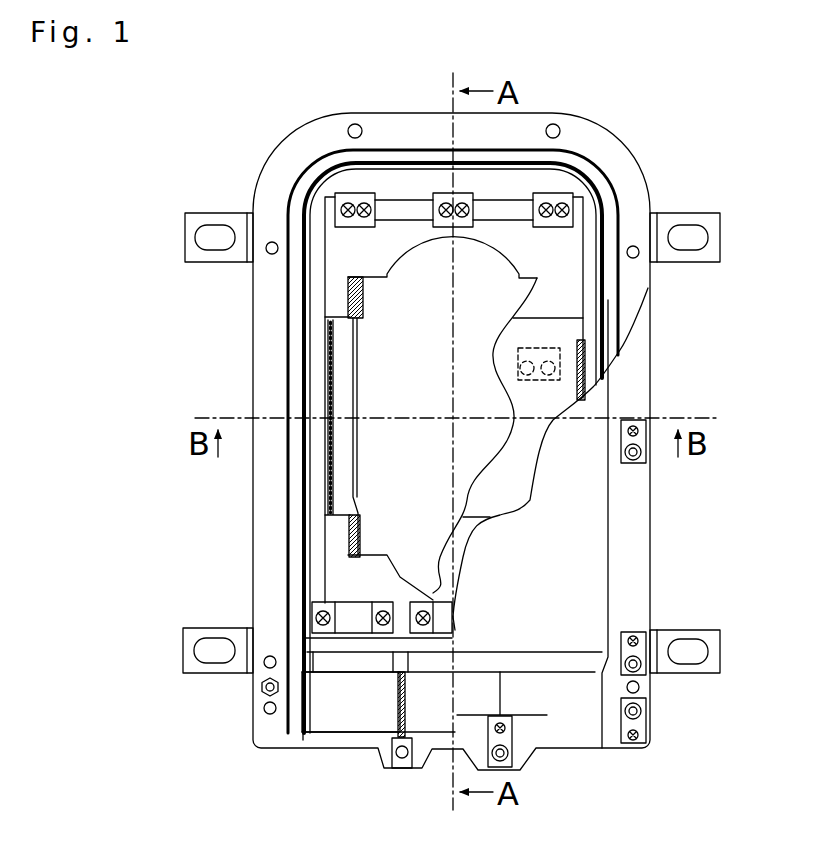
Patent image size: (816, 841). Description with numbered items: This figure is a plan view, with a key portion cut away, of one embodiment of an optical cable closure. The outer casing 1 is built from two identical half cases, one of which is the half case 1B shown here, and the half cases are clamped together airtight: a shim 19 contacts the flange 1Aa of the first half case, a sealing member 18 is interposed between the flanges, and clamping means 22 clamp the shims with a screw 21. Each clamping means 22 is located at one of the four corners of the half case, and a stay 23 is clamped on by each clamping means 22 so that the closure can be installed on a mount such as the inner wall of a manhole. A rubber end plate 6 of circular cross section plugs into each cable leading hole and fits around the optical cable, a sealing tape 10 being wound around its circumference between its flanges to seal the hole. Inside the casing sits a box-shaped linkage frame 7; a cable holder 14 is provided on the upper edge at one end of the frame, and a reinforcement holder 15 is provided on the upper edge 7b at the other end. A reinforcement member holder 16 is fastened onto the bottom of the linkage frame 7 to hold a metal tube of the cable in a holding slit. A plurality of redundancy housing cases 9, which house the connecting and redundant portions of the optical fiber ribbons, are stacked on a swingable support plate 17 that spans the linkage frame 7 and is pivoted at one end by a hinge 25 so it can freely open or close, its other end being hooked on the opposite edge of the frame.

The outer casing 1 is at (491, 427).
The flange 1Aa is at (607, 143).
The half case 1B is at (590, 527).
The end plate 6 is at (343, 710).
The linkage frame 7 is at (323, 256).
The upper edge 7b is at (508, 210).
The redundancy housing case 9 is at (380, 343).
The sealing tape 10 is at (298, 715).
The cable holder 14 is at (440, 610).
The reinforcement holder 15 is at (345, 193).
The reinforcement member holder 16 is at (560, 347).
The swingable support plate 17 is at (340, 455).
The sealing member 18 is at (416, 150).
The shim 19 is at (642, 735).
The screw 21 is at (641, 712).
The clamping means 22 is at (637, 750).
The stay 23 is at (205, 213).
The hinge 25 is at (325, 372).